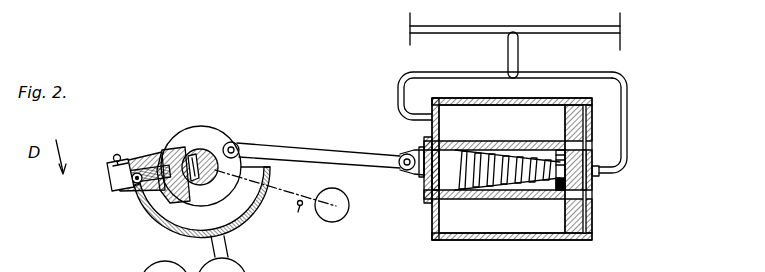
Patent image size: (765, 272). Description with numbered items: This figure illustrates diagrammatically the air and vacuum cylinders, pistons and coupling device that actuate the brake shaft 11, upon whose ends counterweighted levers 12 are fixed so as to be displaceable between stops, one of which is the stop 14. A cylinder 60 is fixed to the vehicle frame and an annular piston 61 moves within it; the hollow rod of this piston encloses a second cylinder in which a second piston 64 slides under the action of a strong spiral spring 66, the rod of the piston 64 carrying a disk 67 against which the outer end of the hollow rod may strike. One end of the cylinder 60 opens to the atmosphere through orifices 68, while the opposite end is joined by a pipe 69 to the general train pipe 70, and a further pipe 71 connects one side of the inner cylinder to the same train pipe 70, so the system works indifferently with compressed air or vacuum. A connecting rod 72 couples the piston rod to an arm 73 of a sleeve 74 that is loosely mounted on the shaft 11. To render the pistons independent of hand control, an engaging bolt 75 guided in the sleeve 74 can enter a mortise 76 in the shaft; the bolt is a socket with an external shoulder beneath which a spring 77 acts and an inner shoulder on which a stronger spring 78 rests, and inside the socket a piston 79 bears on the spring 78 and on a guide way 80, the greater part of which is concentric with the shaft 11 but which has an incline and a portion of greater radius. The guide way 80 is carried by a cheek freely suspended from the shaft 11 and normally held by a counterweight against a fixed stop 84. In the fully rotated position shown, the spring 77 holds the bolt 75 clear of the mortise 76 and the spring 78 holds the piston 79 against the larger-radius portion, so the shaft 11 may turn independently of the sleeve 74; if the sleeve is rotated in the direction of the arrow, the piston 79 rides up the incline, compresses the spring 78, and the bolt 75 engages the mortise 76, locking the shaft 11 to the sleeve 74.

The shaft 11 is at (195, 150).
The levers 12 is at (284, 192).
The stop 14 is at (314, 211).
The cylinder 60 is at (505, 232).
The annular piston 61 is at (570, 220).
The second piston 64 is at (596, 178).
The spiral spring 66 is at (488, 195).
The disk 67 is at (421, 196).
The orifices 68 is at (588, 219).
The pipe 69 is at (463, 72).
The general train pipe 70 is at (550, 34).
The pipe 71 is at (626, 126).
The connecting rod 72 is at (311, 151).
The arm 73 is at (240, 143).
The sleeve 74 is at (210, 127).
The engaging bolt 75 is at (178, 200).
The mortise 76 is at (172, 163).
The spring 77 is at (150, 190).
The spring 78 is at (133, 184).
The piston 79 is at (112, 180).
The guide way 80 is at (238, 226).
The fixed stop 84 is at (117, 154).